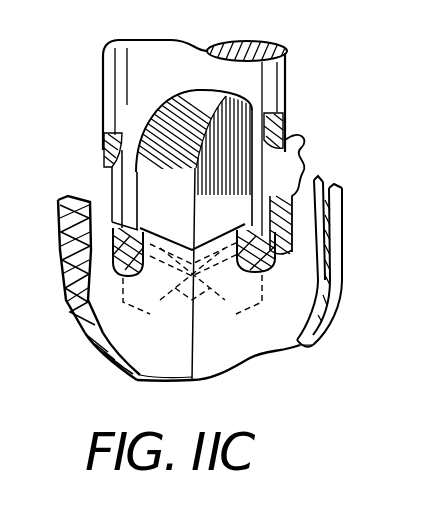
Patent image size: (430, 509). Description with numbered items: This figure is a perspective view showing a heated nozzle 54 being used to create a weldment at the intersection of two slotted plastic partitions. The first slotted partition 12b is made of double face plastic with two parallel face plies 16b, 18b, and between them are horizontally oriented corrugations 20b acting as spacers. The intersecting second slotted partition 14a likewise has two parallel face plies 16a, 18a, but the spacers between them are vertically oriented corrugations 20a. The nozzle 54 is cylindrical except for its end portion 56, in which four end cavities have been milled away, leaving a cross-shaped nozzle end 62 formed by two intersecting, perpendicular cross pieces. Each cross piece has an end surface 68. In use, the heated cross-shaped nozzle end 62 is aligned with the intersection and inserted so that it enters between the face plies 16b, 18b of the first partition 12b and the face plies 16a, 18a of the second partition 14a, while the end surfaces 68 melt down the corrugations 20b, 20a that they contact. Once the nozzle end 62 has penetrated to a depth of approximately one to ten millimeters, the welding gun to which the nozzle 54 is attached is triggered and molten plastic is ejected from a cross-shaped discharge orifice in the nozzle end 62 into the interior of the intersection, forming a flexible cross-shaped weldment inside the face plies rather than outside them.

The heated nozzle 54 is at (300, 99).
The end portion 56 is at (283, 197).
The end surfaces 68 is at (128, 188).
The cross-shaped nozzle end 62 is at (206, 306).
The vertically oriented corrugations 20a is at (320, 182).
The horizontally oriented corrugations 20b is at (62, 240).
The face ply 16a is at (343, 240).
The face ply 16b is at (132, 352).
The face ply 18a is at (247, 347).
The face ply 18b is at (70, 308).
The first slotted partition 12b is at (89, 367).
The second slotted partition 14a is at (326, 350).